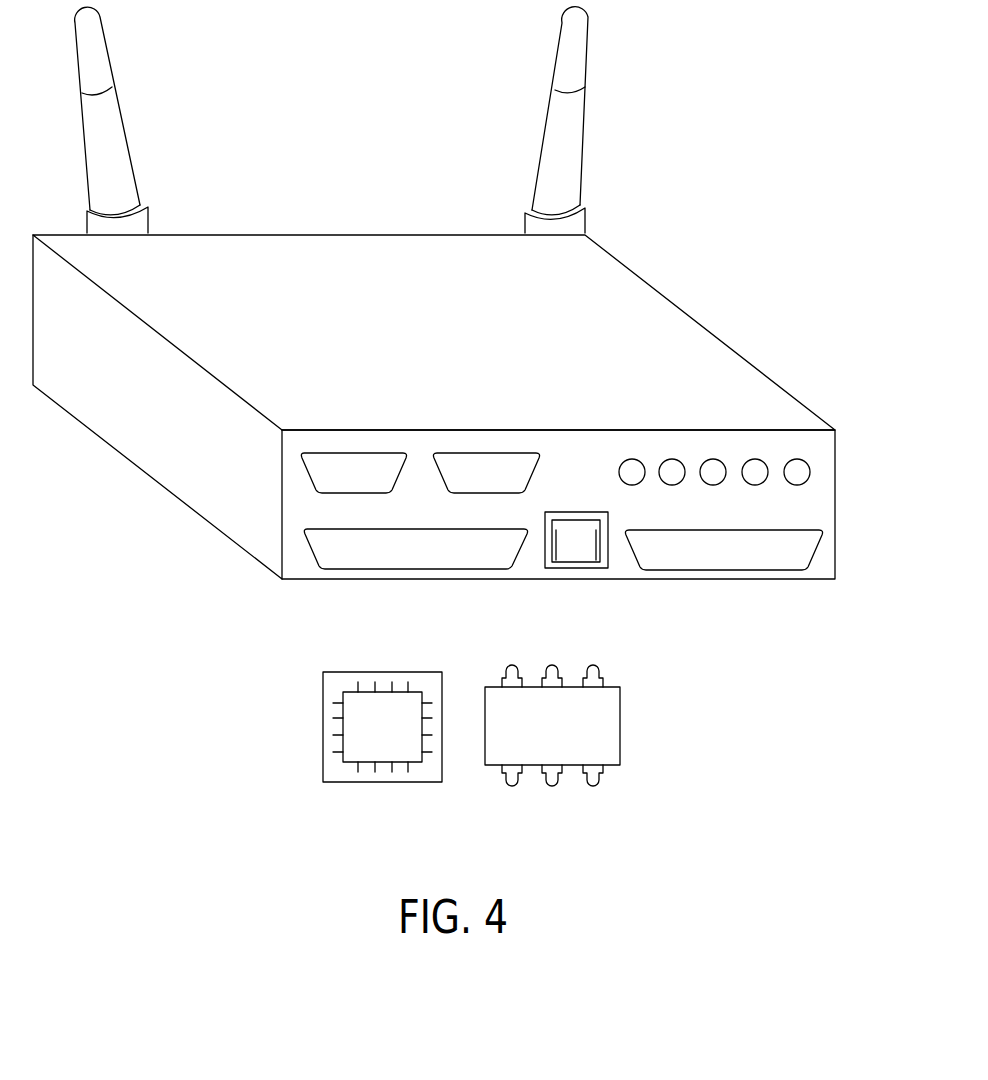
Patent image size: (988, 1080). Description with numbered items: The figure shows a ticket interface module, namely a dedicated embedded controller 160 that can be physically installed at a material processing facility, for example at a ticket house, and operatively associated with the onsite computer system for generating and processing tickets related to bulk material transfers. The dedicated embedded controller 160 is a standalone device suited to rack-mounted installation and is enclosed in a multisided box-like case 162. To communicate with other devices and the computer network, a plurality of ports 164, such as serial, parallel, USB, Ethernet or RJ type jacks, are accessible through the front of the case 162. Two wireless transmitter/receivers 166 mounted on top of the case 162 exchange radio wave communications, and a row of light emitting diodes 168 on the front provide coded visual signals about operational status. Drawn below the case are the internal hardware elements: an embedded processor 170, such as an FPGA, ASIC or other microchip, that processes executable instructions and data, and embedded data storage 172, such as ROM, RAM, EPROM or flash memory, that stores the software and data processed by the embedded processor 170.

The dedicated embedded controller 160 is at (730, 84).
The multisided box-like case 162 is at (127, 437).
The ports 164 is at (338, 493).
The wireless transmitter/receivers 166 is at (123, 125).
The light emitting diodes 168 is at (784, 494).
The embedded processor 170 is at (323, 727).
The embedded data storage 172 is at (620, 725).